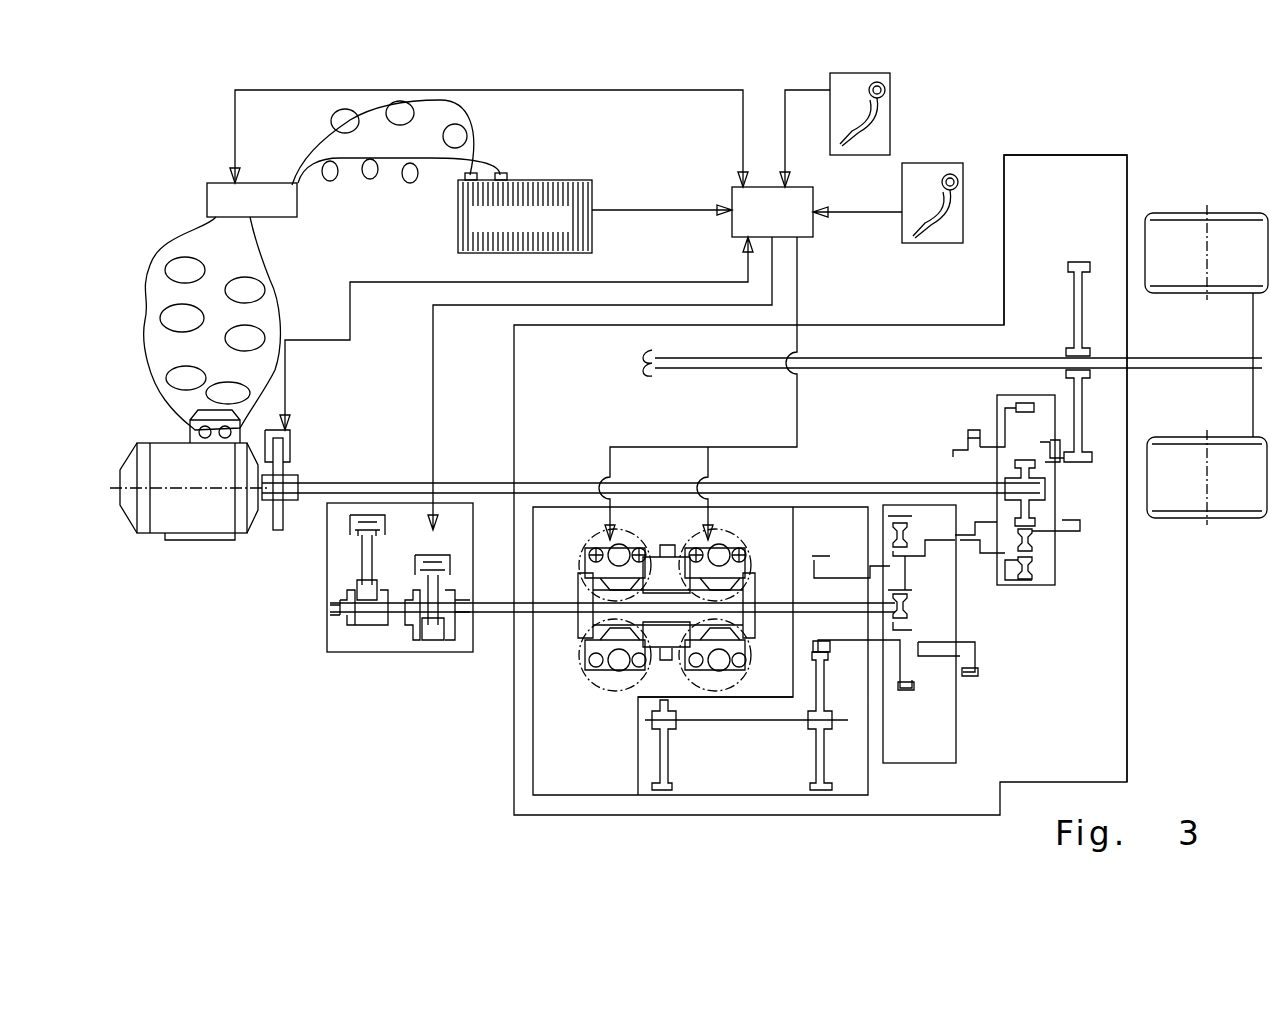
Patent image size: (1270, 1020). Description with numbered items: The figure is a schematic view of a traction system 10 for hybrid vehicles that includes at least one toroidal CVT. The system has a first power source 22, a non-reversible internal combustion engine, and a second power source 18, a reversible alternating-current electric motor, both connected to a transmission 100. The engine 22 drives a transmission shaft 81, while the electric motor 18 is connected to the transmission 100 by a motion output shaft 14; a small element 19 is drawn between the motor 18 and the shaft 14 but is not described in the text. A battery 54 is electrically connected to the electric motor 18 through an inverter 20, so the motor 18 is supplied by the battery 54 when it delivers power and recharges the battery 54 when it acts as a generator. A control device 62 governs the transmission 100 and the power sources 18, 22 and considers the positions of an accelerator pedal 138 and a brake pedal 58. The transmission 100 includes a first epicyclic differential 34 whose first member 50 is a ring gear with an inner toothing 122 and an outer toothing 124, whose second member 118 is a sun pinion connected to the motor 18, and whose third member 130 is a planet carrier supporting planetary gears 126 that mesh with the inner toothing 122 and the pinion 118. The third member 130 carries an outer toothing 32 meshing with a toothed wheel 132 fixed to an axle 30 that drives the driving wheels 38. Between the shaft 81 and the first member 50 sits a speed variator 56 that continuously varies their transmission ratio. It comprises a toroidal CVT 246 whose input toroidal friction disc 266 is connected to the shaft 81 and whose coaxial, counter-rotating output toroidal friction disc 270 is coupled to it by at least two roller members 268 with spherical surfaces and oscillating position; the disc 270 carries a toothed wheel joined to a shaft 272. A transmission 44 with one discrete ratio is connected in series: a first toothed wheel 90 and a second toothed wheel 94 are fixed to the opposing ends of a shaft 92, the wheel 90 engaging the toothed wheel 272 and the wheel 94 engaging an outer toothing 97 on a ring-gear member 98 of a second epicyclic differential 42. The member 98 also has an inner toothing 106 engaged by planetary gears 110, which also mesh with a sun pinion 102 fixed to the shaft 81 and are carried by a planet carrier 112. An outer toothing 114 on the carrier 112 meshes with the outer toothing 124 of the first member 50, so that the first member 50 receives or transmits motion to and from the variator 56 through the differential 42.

The traction system 10 is at (322, 777).
The motion output shaft 14 is at (870, 487).
The second power source 18 is at (200, 545).
The clutch 19 is at (292, 440).
The inverter 20 is at (293, 212).
The first power source 22 is at (420, 645).
The axle 30 is at (892, 370).
The outer toothing 32 is at (1092, 462).
The first differential device 34 is at (1048, 599).
The driving wheels 38 is at (1225, 483).
The second differential 42 is at (919, 634).
The transmission 44 is at (715, 741).
The first member 50 is at (953, 456).
The battery 54 is at (535, 200).
The speed variator 56 is at (722, 796).
The brake pedal 58 is at (890, 112).
The control device 62 is at (772, 212).
The transmission shaft 81 is at (492, 620).
The first toothed wheel 90 is at (668, 755).
The shaft 92 is at (700, 722).
The second toothed wheel 94 is at (842, 752).
The outer toothing 97 is at (825, 645).
The member 98 is at (830, 557).
The transmission 100 is at (1093, 145).
The member 102 is at (930, 625).
The inner toothing 106 is at (900, 688).
The planetary gears 110 is at (905, 548).
The member 112 is at (940, 645).
The outer toothing 114 is at (970, 678).
The second member 118 is at (1035, 480).
The inner toothing 122 is at (1025, 403).
The outer toothing 124 is at (972, 430).
The planetary gears 126 is at (1035, 575).
The third member 130 is at (1045, 540).
The toothed wheel 132 is at (1078, 262).
The accelerator pedal 138 is at (963, 163).
The toroidal CVT 246 is at (700, 651).
The first toroidal friction disc 266 is at (597, 585).
The roller members 268 is at (671, 657).
The second toroidal friction disc 270 is at (662, 558).
The shaft 272 is at (655, 645).